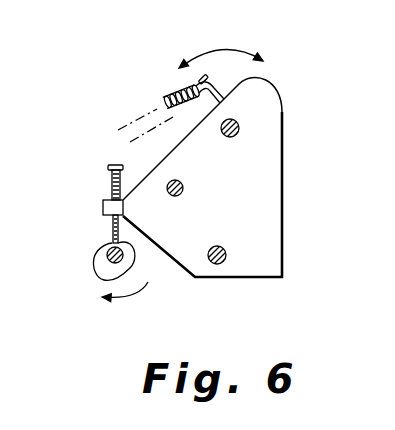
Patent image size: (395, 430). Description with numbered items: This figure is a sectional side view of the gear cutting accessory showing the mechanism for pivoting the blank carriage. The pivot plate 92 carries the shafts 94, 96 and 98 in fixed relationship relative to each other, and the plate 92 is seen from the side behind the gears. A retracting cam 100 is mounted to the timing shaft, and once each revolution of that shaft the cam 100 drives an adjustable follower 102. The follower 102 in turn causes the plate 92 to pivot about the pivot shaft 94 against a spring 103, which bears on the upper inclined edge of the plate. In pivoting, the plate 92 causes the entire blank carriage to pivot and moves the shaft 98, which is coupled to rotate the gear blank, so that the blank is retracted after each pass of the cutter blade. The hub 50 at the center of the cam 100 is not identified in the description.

The pivot plate 92 is at (282, 229).
The pivot shaft 94 is at (226, 251).
The shaft 96 is at (183, 186).
The shaft 98 is at (239, 126).
The retracting cam 100 is at (92, 265).
The adjustable follower 102 is at (112, 183).
The spring 103 is at (172, 95).
The shaft 50 is at (108, 250).